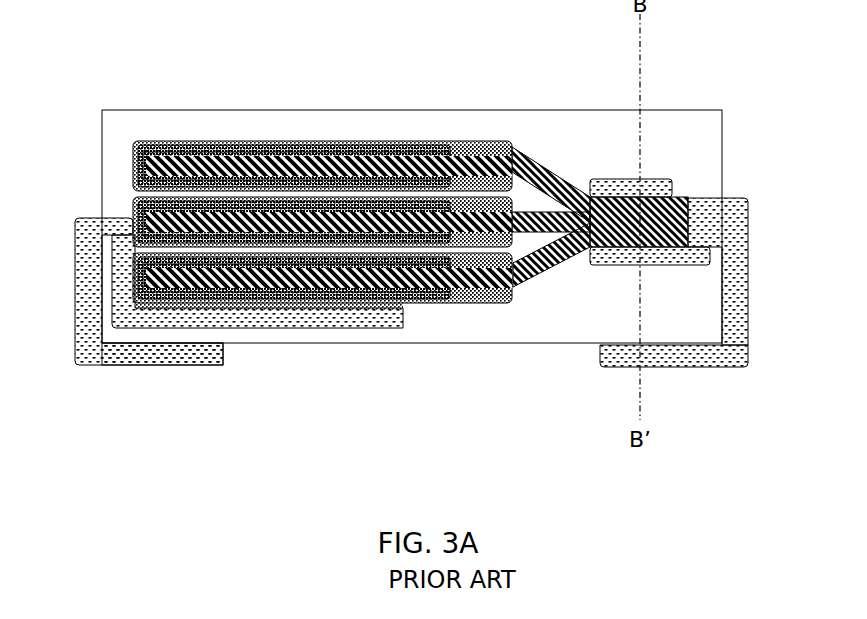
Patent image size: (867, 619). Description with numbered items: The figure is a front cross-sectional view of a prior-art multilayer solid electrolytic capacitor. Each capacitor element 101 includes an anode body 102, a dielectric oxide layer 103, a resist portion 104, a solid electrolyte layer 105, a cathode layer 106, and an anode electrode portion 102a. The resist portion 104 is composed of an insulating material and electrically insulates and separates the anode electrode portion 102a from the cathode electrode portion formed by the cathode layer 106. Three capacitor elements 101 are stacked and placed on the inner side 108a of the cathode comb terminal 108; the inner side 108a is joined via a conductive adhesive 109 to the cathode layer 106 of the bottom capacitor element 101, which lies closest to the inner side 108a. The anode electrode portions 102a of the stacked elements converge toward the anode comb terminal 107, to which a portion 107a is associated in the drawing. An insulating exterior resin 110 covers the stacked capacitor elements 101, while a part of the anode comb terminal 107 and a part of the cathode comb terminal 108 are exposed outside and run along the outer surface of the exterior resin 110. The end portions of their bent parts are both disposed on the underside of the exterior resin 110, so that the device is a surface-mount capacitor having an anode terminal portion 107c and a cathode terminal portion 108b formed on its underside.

The capacitor element 101 is at (309, 153).
The anode body 102 is at (249, 147).
The anode electrode portion 102a is at (684, 197).
The dielectric oxide layer 103 is at (313, 147).
The resist portion 104 is at (476, 143).
The solid electrolyte layer 105 is at (396, 150).
The cathode layer 106 is at (172, 143).
The anode comb terminal 107 is at (695, 276).
The connection pad of second external electrode 107a is at (602, 260).
The anode terminal portion 107c is at (687, 358).
The cathode comb terminal 108 is at (129, 286).
The inner side 108a is at (244, 320).
The cathode terminal portion 108b is at (165, 358).
The conductive adhesive 109 is at (324, 312).
The exterior resin 110 is at (562, 127).